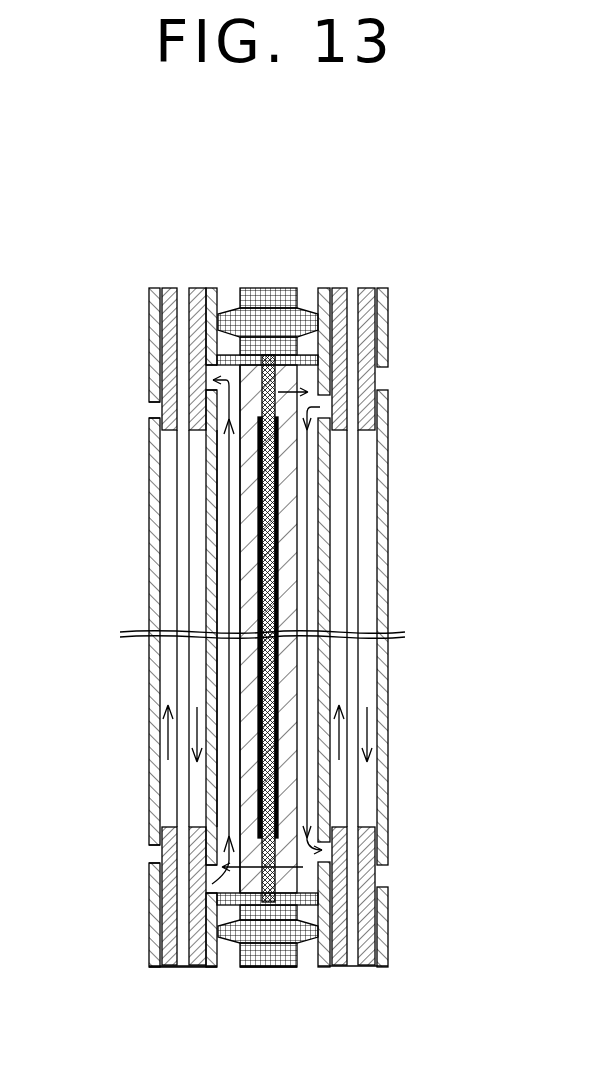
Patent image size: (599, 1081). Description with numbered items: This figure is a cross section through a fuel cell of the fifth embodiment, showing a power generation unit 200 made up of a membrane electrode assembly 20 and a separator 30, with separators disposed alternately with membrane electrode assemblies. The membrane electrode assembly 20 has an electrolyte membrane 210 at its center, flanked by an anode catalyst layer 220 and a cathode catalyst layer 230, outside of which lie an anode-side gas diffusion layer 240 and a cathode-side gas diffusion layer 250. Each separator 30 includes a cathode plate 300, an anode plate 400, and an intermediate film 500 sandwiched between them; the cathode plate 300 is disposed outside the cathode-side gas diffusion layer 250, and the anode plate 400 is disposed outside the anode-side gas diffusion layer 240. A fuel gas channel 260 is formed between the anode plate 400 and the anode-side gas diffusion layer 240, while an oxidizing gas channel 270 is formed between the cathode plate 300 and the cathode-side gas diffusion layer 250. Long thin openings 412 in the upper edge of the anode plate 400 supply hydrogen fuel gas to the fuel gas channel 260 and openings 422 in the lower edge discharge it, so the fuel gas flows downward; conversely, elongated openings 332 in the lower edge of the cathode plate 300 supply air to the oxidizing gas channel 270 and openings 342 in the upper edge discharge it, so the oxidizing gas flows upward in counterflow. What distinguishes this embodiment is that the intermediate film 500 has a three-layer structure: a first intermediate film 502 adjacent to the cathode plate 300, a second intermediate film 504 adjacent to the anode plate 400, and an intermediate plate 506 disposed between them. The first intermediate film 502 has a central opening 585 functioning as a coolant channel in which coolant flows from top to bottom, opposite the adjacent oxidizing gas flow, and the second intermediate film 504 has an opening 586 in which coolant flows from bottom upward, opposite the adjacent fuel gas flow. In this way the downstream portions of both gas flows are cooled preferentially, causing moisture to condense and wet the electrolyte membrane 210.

The intermediate film 500 is at (227, 160).
The anode plate 400 is at (155, 290).
The second intermediate film 504 is at (166, 290).
The first intermediate film 502 is at (193, 290).
The intermediate plate 506 is at (182, 290).
The cathode plate 300 is at (212, 290).
The openings 342 is at (213, 372).
The openings 412 is at (158, 410).
The openings 422 is at (158, 858).
The openings 332 is at (218, 882).
The opening 585 is at (197, 592).
The opening 586 is at (168, 617).
The fuel gas channel 260 is at (270, 290).
The electrolyte membrane 210 is at (320, 371).
The anode catalyst layer 220 is at (212, 445).
The cathode catalyst layer 230 is at (247, 477).
The anode-side gas diffusion layer 240 is at (258, 505).
The cathode-side gas diffusion layer 250 is at (250, 532).
The oxidizing gas channel 270 is at (225, 570).
The separator 30 is at (218, 972).
The membrane electrode assembly 20 is at (318, 972).
The power generation unit 200 is at (320, 1015).